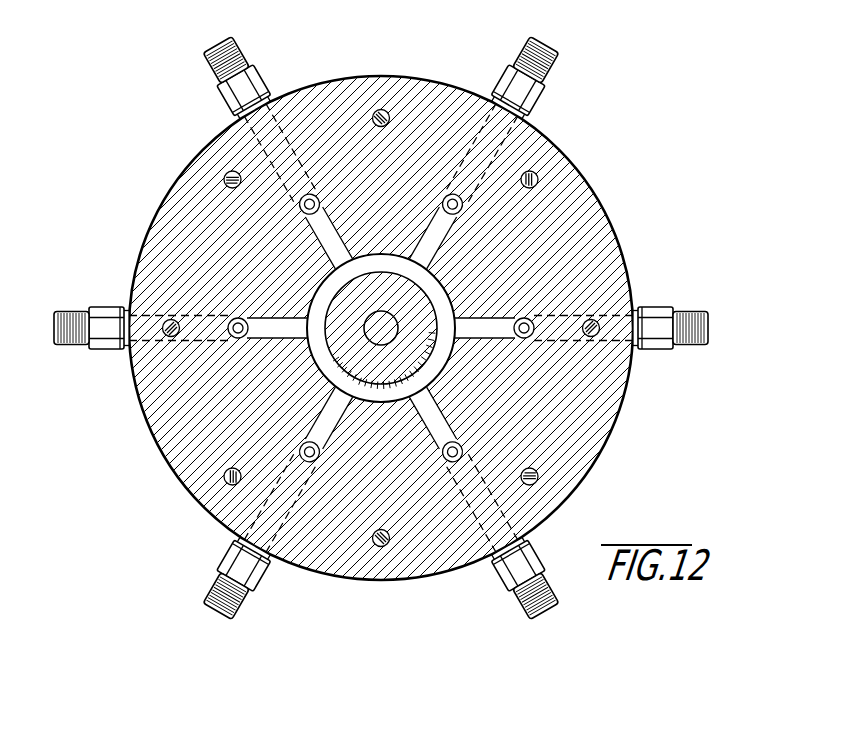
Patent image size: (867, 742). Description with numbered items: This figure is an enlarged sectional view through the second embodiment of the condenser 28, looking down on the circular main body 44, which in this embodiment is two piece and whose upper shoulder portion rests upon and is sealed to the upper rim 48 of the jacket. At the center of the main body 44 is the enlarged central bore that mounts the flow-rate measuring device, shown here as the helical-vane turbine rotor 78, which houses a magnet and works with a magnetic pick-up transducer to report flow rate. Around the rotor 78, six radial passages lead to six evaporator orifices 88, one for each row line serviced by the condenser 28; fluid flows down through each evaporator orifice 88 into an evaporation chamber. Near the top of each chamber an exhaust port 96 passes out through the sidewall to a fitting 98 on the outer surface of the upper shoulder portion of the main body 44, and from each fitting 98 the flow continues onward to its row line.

The condenser 28 is at (433, 338).
The main body 44 is at (589, 181).
The upper rim 48 is at (580, 210).
The helical-vane turbine rotor 78 is at (327, 298).
The evaporator orifice 88 is at (313, 195).
The exhaust port 96 is at (287, 143).
The fitting 98 is at (250, 72).